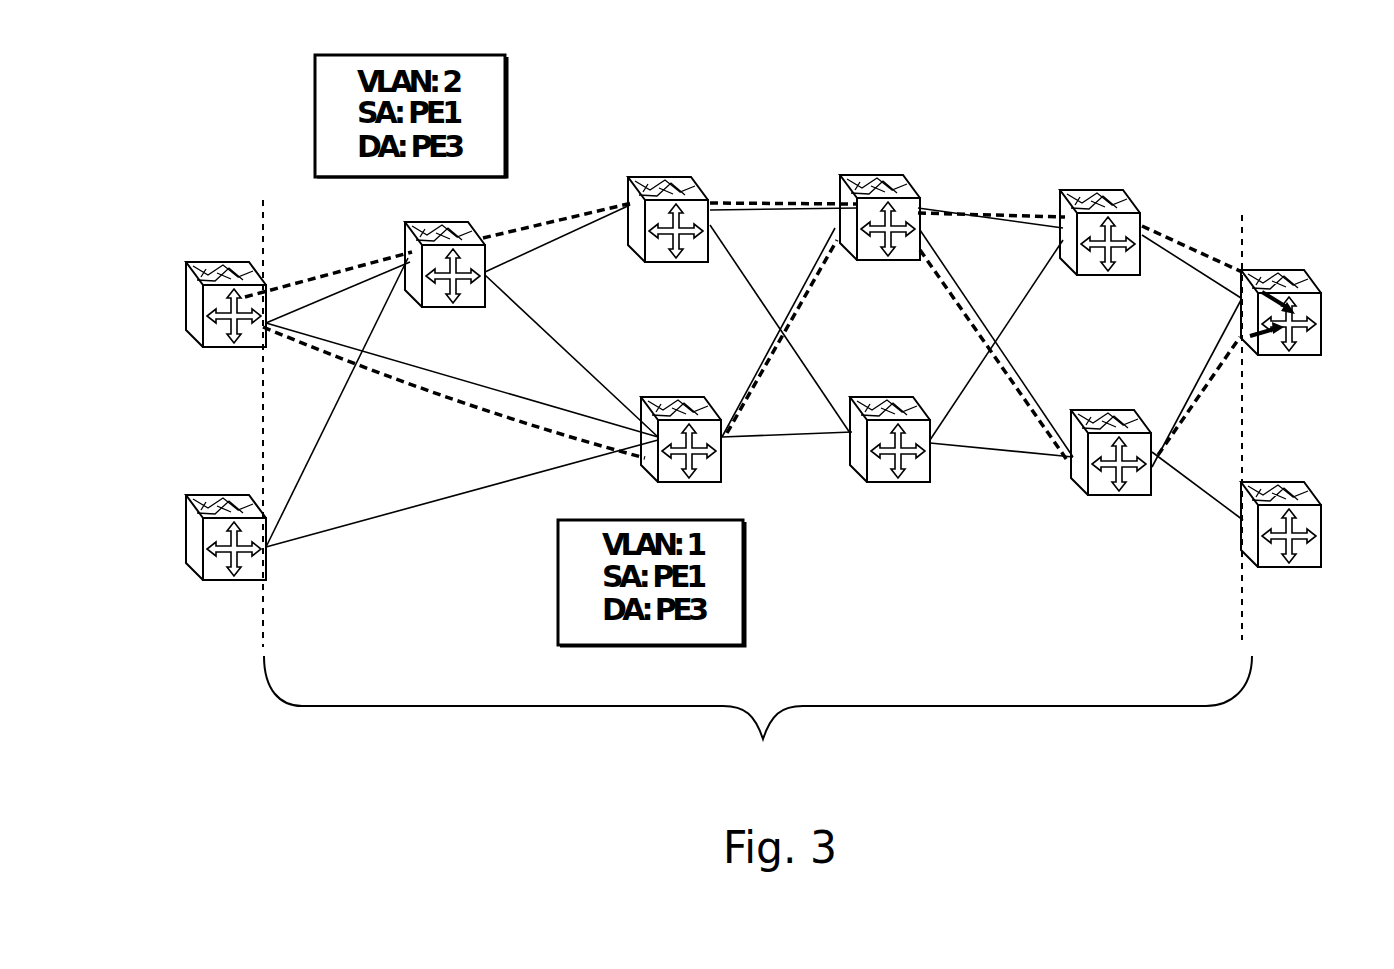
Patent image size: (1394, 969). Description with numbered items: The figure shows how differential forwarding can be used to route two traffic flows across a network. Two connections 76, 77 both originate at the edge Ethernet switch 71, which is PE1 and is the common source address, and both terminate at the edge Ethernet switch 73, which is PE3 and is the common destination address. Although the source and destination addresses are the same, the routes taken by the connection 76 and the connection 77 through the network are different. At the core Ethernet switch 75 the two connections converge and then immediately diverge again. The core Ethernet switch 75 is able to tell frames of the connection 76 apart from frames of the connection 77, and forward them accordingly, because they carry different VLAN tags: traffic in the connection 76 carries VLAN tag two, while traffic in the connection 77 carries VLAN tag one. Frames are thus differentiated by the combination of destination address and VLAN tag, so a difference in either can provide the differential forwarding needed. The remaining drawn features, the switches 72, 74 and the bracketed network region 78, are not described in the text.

The edge Ethernet switch 71 is at (198, 305).
The customer edge router CE2 72 is at (190, 542).
The edge Ethernet switch 73 is at (1320, 308).
The customer edge router CE4 74 is at (1312, 519).
The core Ethernet switch 75 is at (870, 175).
The connection 76 is at (558, 222).
The connection 77 is at (430, 390).
The provider network 78 is at (757, 492).